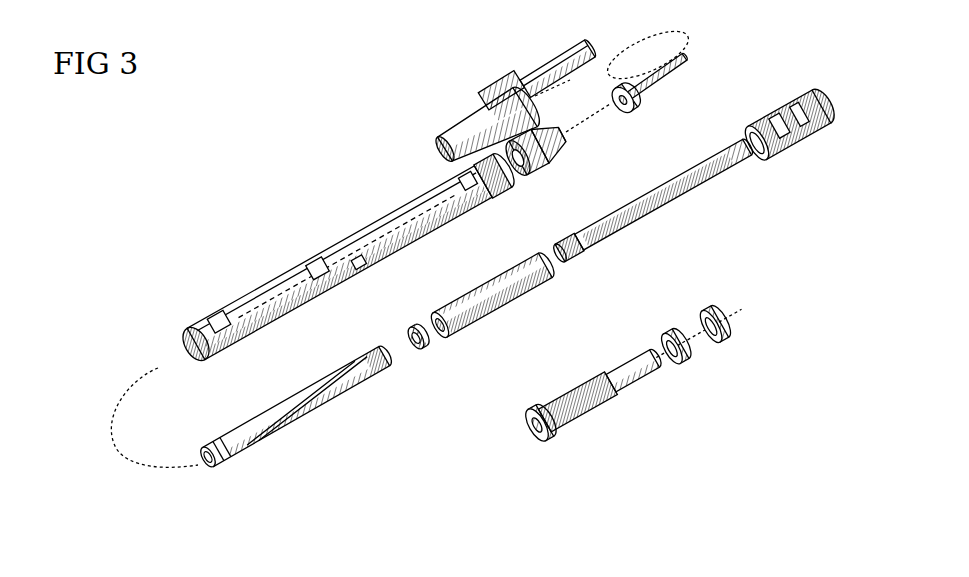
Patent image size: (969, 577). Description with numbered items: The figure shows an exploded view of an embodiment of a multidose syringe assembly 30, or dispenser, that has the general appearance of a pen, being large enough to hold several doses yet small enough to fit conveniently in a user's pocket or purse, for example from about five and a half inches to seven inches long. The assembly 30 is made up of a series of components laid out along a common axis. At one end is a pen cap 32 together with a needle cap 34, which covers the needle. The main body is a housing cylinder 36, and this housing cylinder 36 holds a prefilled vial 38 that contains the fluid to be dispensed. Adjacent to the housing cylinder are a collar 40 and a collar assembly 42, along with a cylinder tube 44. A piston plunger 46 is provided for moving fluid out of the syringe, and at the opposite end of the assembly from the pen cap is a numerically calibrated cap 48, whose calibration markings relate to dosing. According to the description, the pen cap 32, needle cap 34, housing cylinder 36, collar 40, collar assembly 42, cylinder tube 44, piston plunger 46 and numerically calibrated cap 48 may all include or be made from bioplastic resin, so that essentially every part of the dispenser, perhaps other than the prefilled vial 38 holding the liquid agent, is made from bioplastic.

The multidose syringe assembly 30 is at (458, 449).
The pen cap 32 is at (489, 91).
The needle cap 34 is at (658, 92).
The housing cylinder 36 is at (410, 243).
The prefilled vial 38 is at (305, 389).
The collar 40 is at (427, 352).
The collar assembly 42 is at (708, 375).
The cylinder tube 44 is at (541, 290).
The piston plunger 46 is at (697, 194).
The numerically calibrated cap 48 is at (796, 147).